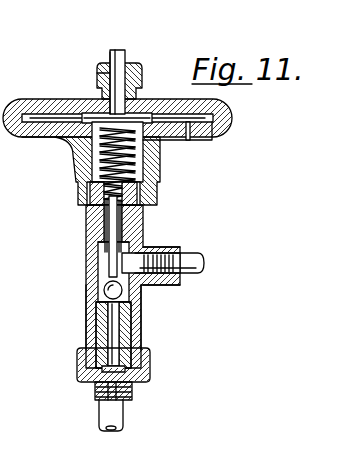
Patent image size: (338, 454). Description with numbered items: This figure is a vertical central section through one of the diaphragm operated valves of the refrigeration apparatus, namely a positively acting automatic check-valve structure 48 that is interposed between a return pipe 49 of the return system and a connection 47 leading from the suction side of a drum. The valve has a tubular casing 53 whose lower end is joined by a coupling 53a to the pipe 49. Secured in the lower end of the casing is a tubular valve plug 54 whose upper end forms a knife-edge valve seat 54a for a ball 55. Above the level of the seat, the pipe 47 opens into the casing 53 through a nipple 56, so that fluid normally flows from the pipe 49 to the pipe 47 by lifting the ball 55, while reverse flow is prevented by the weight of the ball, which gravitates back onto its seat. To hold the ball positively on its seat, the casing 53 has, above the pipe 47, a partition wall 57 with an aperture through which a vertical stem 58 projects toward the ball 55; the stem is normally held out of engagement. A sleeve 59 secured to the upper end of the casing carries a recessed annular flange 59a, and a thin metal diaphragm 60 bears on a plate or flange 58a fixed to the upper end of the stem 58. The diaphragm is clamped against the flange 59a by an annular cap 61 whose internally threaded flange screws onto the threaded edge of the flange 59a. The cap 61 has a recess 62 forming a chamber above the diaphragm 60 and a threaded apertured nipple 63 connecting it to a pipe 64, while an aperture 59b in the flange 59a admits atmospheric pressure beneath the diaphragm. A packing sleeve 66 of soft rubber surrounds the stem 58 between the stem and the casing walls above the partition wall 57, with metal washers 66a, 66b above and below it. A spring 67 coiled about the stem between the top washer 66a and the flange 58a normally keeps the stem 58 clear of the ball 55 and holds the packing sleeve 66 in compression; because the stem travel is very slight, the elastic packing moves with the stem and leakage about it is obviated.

The connection 47 is at (197, 254).
The positively acting automatic check-valve structure 48 is at (70, 365).
The pipe 49 is at (123, 417).
The tubular casing 53 is at (141, 336).
The coupling 53a is at (148, 361).
The tubular valve plug 54 is at (86, 332).
The knife-edge valve seat 54a is at (86, 315).
The ball 55 is at (104, 289).
The nipple 56 is at (157, 247).
The partition wall 57 is at (104, 248).
The vertical stem 58 is at (109, 262).
The plate or flange 58a is at (92, 100).
The sleeve 59 is at (77, 166).
The recessed annular flange 59a is at (44, 128).
The aperture 59b is at (188, 124).
The diaphragm 60 is at (163, 121).
The annular cap 61 is at (35, 102).
The recess 62 is at (62, 113).
The threaded apertured nipple 63 is at (138, 82).
The pipe 64 is at (125, 50).
The packing sleeve 66 is at (130, 221).
The metal washer 66a is at (100, 206).
The metal washer 66b is at (100, 232).
The spring 67 is at (100, 168).